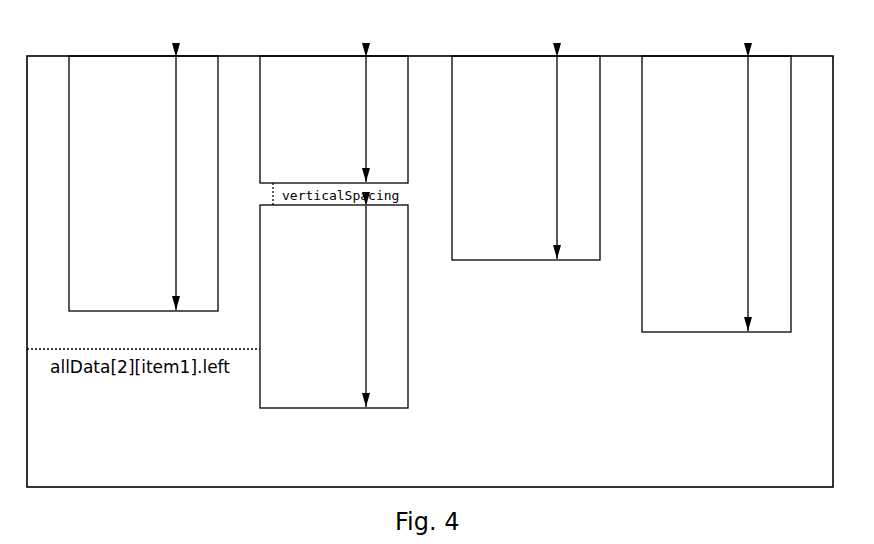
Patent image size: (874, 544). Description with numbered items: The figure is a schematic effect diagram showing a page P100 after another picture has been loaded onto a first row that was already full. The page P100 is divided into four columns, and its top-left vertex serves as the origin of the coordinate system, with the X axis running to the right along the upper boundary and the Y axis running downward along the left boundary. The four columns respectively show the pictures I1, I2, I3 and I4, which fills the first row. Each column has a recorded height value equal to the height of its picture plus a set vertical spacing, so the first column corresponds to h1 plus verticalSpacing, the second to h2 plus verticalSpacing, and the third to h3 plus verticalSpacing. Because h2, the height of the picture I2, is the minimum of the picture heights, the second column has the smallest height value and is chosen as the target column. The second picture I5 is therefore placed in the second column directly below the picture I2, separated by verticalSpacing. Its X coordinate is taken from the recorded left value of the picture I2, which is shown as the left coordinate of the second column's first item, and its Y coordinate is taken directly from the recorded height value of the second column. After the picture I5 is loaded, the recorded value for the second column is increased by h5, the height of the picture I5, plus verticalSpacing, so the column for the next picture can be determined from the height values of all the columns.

The page P100 is at (430, 248).
The picture I1 is at (143, 183).
The picture I2 is at (334, 119).
The picture I3 is at (526, 158).
The picture I4 is at (716, 194).
The second picture I5 is at (334, 306).
The height of picture I1 h1 is at (192, 183).
The height of picture I2 h2 is at (383, 119).
The height of picture I3 h3 is at (574, 158).
The height of picture I5 h5 is at (383, 306).